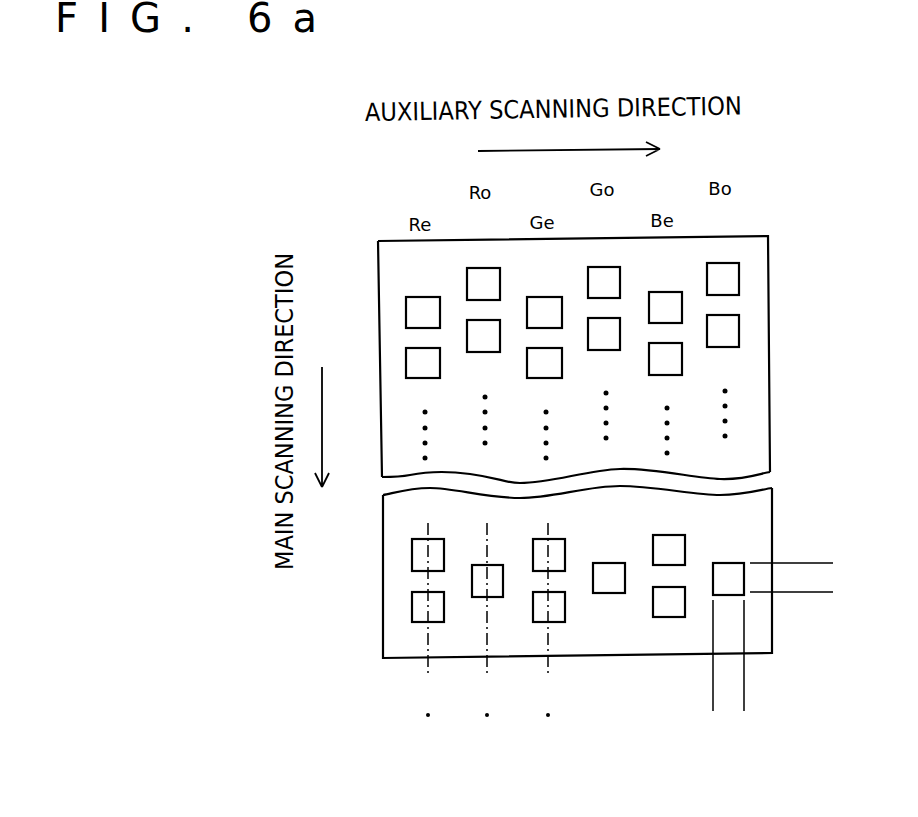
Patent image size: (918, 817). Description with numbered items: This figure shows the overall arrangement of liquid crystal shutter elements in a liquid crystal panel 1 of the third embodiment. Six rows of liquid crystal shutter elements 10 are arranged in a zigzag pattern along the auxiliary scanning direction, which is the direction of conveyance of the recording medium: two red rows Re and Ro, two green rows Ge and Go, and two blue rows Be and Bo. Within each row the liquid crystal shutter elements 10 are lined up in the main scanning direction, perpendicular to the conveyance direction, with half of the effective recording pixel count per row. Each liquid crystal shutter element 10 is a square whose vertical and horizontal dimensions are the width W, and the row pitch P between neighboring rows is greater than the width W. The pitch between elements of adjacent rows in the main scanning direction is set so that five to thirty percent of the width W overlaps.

The liquid crystal panel 1 is at (378, 272).
The liquid crystal shutter element 10 is at (739, 337).
The row pitch P is at (534, 709).
The width of the liquid crystal shutter element W is at (686, 698).